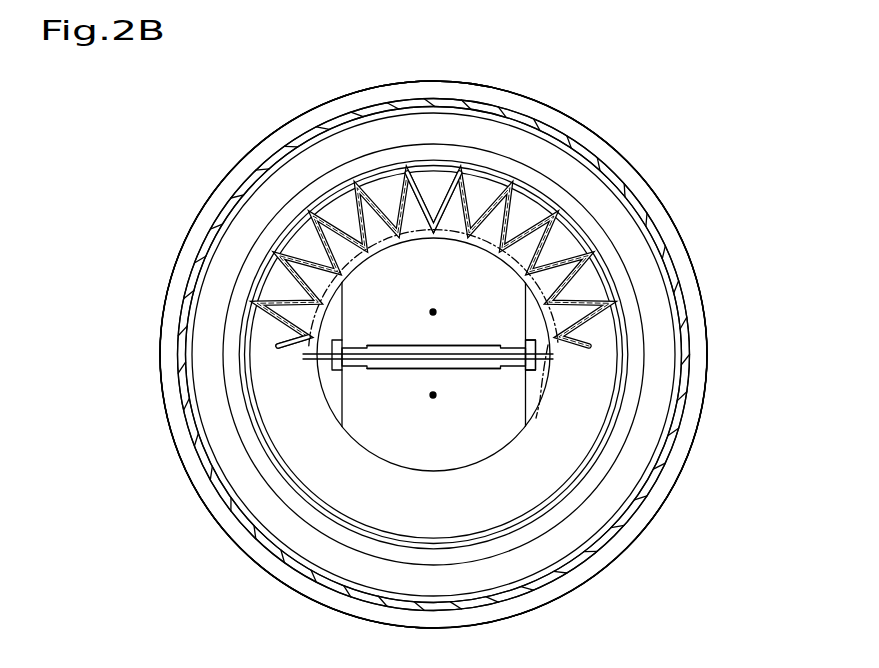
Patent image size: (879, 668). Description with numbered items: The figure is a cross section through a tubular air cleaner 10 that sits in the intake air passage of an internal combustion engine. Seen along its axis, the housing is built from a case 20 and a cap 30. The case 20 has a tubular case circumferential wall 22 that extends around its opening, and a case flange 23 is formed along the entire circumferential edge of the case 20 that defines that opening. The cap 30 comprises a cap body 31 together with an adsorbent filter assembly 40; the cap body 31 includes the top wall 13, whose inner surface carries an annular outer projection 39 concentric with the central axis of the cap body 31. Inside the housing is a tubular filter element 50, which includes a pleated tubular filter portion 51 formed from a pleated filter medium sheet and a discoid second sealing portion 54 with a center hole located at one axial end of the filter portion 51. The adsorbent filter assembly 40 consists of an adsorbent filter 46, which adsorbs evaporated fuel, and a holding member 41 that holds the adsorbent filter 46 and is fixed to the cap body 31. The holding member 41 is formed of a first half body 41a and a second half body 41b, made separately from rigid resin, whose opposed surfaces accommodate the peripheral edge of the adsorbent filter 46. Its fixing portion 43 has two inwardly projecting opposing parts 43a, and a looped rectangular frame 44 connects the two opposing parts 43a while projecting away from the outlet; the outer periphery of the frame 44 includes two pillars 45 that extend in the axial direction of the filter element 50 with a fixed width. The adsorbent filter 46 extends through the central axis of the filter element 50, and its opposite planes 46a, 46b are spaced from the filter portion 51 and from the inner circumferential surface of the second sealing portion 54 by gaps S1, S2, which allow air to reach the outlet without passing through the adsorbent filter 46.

The air cleaner 10 is at (773, 110).
The top wall 13 is at (645, 382).
The case 20 is at (646, 173).
The case circumferential wall 22 is at (503, 102).
The case flange 23 is at (611, 147).
The cap 30 is at (636, 520).
The cap body 31 is at (692, 444).
The outer projection 39 is at (627, 333).
The adsorbent filter assembly 40 is at (364, 318).
The holding member 41 is at (295, 341).
The first half body 41a is at (290, 341).
The second half body 41b is at (303, 358).
The fixing portion 43 is at (516, 323).
The opposing parts 43a is at (324, 386).
The frame 44 is at (509, 370).
The pillar 45 is at (538, 416).
The adsorbent filter 46 is at (379, 378).
The plane 46a is at (396, 345).
The plane 46b is at (400, 371).
The filter element 50 is at (592, 282).
The filter portion 51 is at (579, 236).
The second sealing portion 54 is at (433, 237).
The gap S1 is at (433, 310).
The gap S2 is at (433, 398).